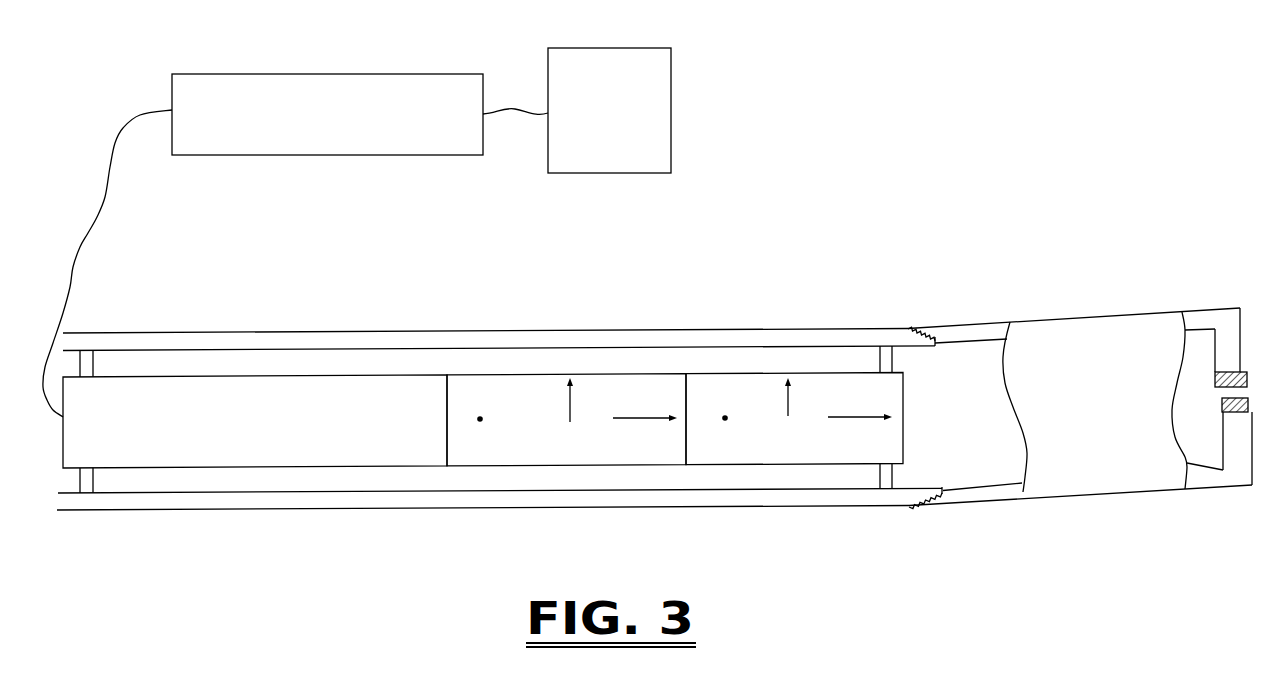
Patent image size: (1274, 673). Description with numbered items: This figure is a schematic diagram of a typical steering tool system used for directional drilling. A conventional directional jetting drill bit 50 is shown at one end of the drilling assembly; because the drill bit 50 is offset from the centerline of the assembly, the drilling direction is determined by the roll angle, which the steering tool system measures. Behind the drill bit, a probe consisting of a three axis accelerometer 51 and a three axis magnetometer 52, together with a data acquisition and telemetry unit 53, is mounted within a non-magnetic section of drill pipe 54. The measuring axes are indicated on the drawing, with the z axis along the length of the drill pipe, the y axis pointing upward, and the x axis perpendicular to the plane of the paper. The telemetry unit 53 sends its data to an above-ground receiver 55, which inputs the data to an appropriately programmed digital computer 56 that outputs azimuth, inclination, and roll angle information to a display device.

The directional jetting drill bit 50 is at (1120, 490).
The three axis accelerometer 51 is at (562, 467).
The three axis magnetometer 52 is at (765, 465).
The data acquisition and telemetry unit 53 is at (262, 468).
The non-magnetic section of drill pipe 54 is at (440, 508).
The above-ground receiver 55 is at (332, 73).
The digital computer 56 is at (612, 48).